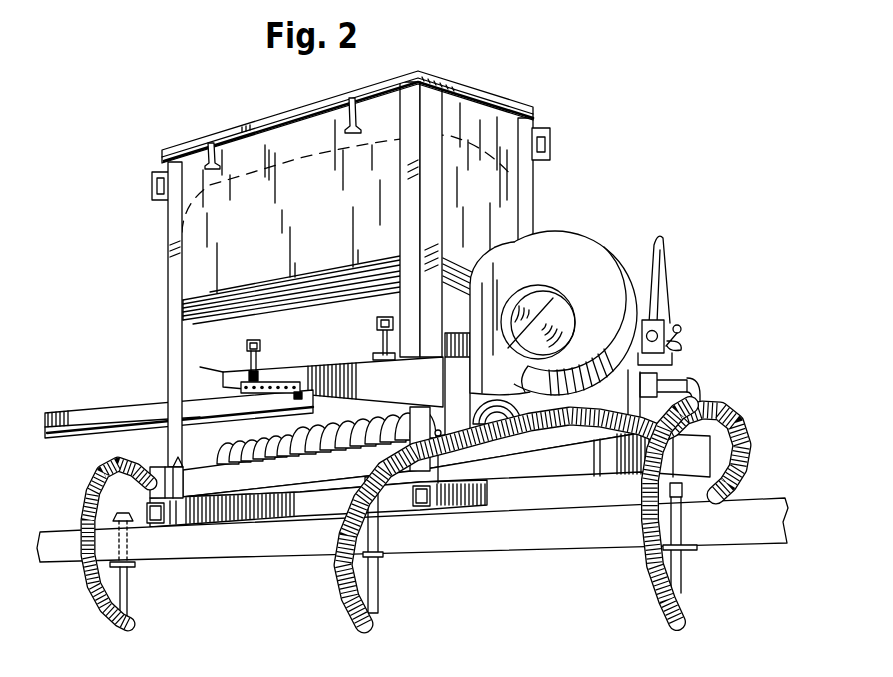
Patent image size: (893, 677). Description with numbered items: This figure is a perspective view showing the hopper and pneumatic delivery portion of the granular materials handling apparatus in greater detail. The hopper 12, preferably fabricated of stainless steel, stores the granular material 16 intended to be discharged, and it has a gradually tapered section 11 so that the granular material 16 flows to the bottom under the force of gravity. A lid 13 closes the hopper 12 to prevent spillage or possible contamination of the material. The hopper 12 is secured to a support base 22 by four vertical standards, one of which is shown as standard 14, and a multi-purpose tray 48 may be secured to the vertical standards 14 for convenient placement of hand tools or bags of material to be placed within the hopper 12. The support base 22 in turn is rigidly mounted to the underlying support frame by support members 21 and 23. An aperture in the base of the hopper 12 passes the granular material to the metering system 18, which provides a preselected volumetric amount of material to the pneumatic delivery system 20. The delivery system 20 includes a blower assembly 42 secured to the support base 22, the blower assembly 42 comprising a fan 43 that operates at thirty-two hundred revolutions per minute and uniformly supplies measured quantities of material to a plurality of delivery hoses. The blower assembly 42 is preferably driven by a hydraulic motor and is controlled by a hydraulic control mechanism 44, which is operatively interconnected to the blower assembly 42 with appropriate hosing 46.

The gradually tapered section 11 is at (248, 365).
The hopper 12 is at (480, 127).
The lid 13 is at (193, 142).
The vertical standard 14 is at (530, 128).
The granular material 16 is at (194, 226).
The metering system 18 is at (222, 368).
The pneumatic delivery system 20 is at (611, 260).
The support member 21 is at (180, 513).
The support base 22 is at (587, 467).
The support member 23 is at (453, 513).
The blower assembly 42 is at (560, 262).
The fan 43 is at (575, 314).
The hydraulic control mechanism 44 is at (677, 320).
The hosing 46 is at (663, 252).
The multi-purpose tray 48 is at (110, 430).